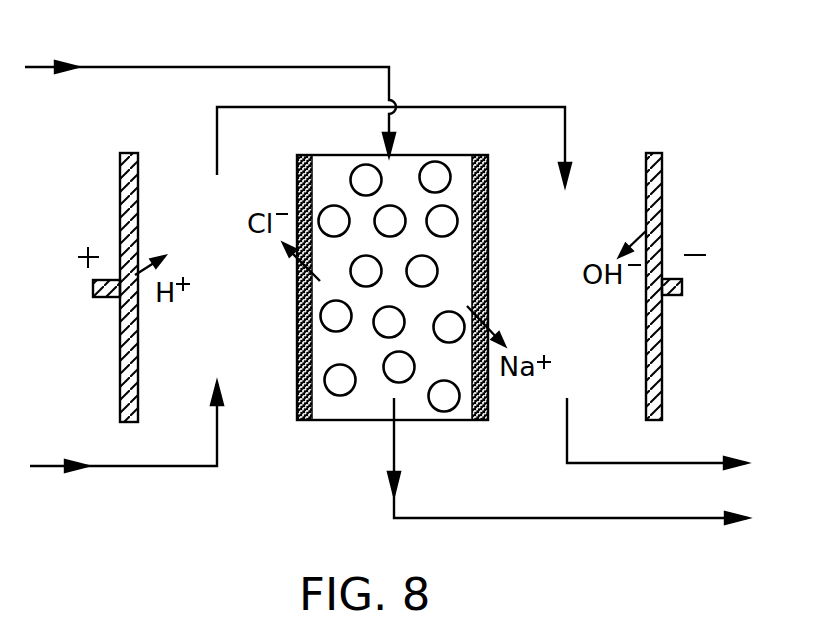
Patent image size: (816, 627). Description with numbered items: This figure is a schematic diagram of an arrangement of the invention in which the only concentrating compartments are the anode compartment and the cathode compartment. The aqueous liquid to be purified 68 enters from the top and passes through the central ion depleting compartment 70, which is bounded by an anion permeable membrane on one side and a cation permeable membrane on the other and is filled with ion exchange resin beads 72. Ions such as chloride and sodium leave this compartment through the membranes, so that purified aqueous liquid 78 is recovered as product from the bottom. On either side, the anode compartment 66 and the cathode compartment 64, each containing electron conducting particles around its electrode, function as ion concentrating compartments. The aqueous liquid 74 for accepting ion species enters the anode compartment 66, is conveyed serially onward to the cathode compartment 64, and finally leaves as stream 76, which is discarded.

The cathode compartment 64 is at (584, 249).
The anode compartment 66 is at (240, 346).
The aqueous liquid to be purified 68 is at (140, 67).
The ion depleting compartment 70 is at (417, 403).
The ion exchange resin beads 72 is at (390, 380).
The aqueous liquid for accepting ion species 74 is at (162, 467).
The discarded stream 76 is at (679, 463).
The purified aqueous liquid 78 is at (616, 518).